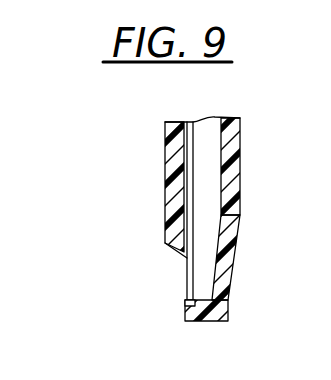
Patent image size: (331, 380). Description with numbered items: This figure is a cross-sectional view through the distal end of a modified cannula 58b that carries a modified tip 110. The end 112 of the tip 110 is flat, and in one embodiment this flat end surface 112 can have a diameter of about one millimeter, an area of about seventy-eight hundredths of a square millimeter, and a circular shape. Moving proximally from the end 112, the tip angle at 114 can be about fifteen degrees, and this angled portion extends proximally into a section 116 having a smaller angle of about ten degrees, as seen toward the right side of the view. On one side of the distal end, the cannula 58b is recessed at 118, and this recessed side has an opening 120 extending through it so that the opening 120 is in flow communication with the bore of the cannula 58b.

The tip 110 is at (128, 156).
The cannula 58b is at (240, 149).
The section 116 is at (240, 204).
The tip angle 114 is at (229, 270).
The recess 118 is at (176, 243).
The opening 120 is at (186, 291).
The end 112 is at (194, 322).